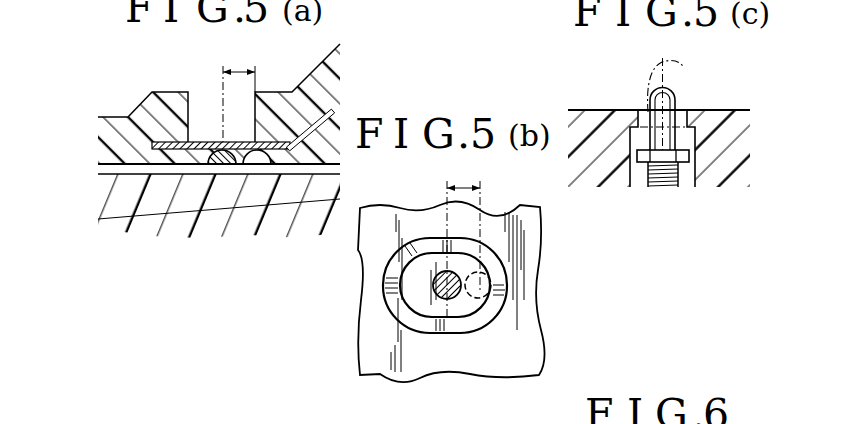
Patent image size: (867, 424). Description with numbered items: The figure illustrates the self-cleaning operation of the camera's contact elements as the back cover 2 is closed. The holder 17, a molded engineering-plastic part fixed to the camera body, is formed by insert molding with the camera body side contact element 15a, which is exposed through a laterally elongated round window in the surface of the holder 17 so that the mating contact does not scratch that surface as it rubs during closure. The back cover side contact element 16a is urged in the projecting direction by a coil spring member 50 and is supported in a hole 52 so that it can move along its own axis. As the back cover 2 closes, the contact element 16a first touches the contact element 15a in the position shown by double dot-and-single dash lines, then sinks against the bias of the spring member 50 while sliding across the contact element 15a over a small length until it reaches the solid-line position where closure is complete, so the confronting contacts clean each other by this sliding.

In FIG. 5A, the back cover 2 is at (133, 202).
In FIG. 5C, the back cover 2 is at (588, 124).
In FIG. 5A, the holder 17 is at (112, 134).
In FIG. 5B, the holder 17 is at (388, 225).
In FIG. 5A, the contact element 15a is at (207, 140).
In FIG. 5B, the contact element 15a is at (407, 292).
In FIG. 5A, the contact element 16a is at (251, 166).
In FIG. 5B, the contact element 16a is at (478, 300).
In FIG. 5C, the contact element 16a is at (684, 66).
In FIG. 5C, the hole 52 is at (649, 108).
In FIG. 5C, the spring member 50 is at (662, 189).